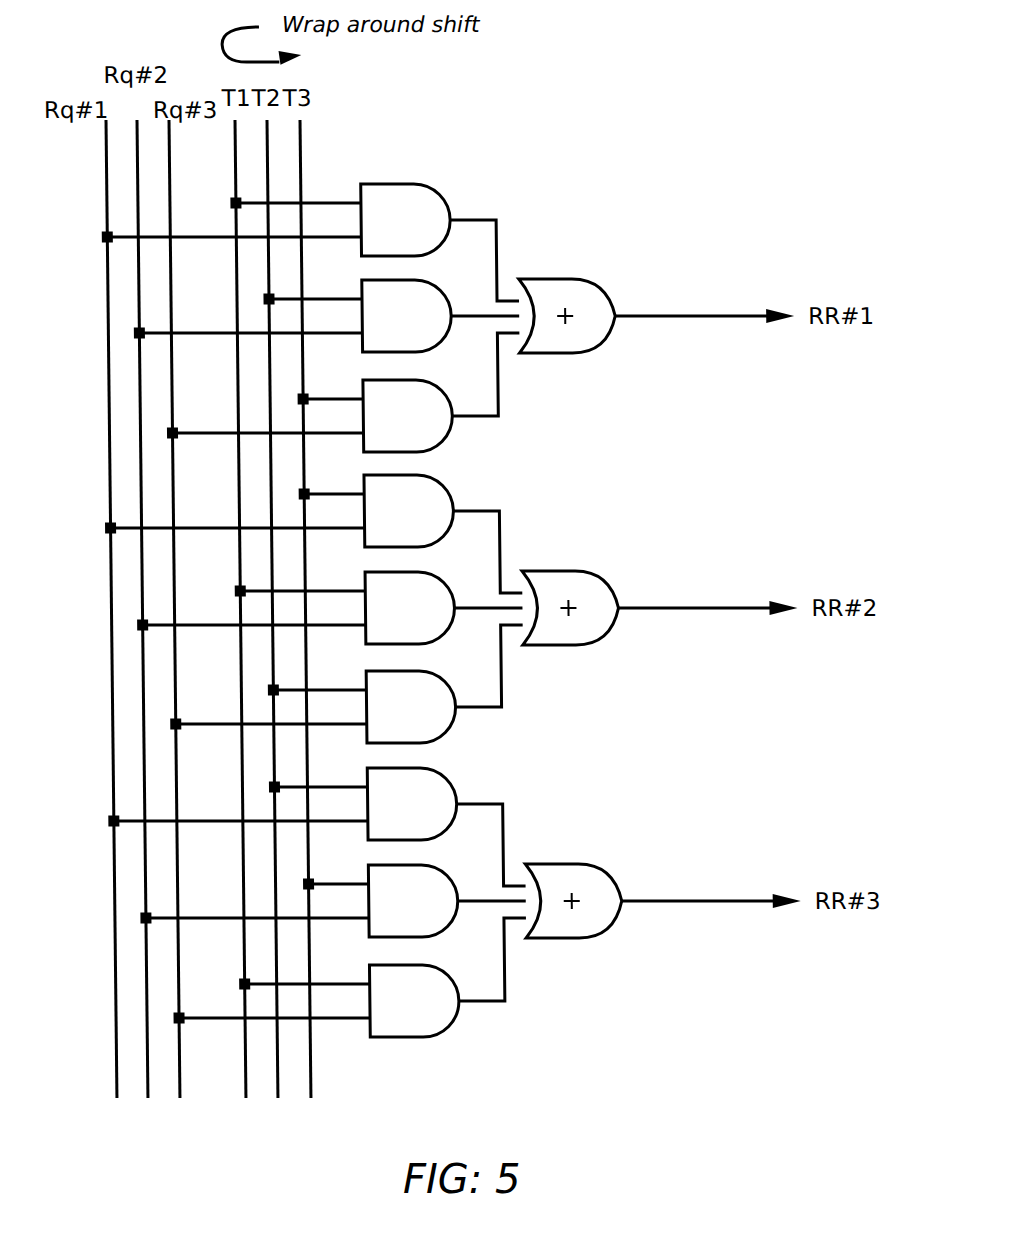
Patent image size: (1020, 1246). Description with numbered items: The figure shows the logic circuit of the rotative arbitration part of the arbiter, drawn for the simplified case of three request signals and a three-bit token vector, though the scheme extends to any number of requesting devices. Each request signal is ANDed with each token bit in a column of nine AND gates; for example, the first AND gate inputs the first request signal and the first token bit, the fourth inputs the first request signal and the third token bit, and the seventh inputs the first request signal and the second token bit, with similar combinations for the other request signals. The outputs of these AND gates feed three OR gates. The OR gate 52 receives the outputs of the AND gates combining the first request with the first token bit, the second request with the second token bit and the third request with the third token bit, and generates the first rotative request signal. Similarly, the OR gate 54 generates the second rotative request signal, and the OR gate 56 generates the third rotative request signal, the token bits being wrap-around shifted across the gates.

The OR gate 52 is at (560, 280).
The OR gate 54 is at (560, 578).
The OR gate 56 is at (567, 868).